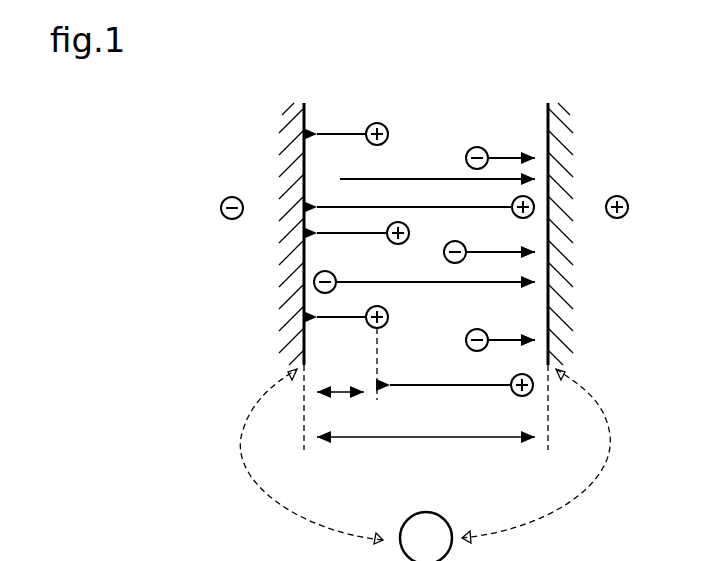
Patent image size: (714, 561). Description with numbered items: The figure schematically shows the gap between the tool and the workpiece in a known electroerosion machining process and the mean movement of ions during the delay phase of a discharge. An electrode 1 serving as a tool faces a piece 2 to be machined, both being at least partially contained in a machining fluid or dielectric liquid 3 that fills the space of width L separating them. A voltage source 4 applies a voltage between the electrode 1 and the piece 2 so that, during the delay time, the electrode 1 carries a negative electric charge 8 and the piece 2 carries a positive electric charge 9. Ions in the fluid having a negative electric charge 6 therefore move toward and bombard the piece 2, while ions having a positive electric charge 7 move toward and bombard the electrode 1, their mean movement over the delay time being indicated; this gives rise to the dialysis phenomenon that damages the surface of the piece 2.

The electrode 1 is at (303, 124).
The piece 2 is at (548, 133).
The machining fluid 3 is at (427, 96).
The voltage source 4 is at (425, 465).
The negative electric charge 6 is at (489, 151).
The positive electric charge 7 is at (369, 126).
The negative electric charge 8 is at (220, 208).
The positive electric charge 9 is at (630, 207).